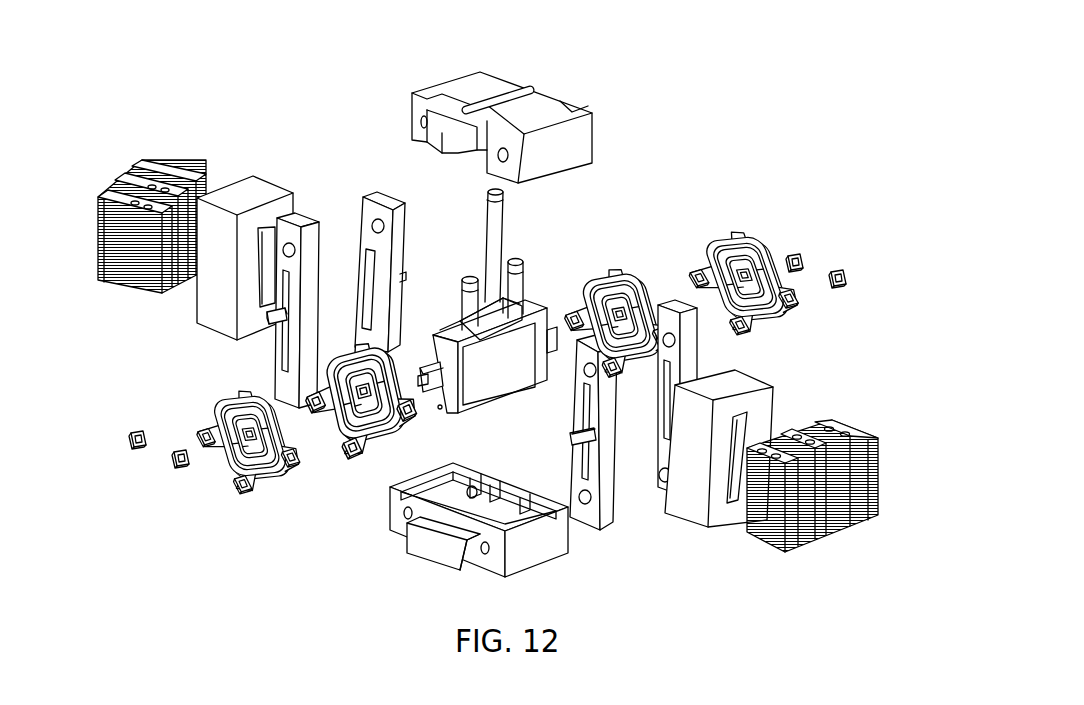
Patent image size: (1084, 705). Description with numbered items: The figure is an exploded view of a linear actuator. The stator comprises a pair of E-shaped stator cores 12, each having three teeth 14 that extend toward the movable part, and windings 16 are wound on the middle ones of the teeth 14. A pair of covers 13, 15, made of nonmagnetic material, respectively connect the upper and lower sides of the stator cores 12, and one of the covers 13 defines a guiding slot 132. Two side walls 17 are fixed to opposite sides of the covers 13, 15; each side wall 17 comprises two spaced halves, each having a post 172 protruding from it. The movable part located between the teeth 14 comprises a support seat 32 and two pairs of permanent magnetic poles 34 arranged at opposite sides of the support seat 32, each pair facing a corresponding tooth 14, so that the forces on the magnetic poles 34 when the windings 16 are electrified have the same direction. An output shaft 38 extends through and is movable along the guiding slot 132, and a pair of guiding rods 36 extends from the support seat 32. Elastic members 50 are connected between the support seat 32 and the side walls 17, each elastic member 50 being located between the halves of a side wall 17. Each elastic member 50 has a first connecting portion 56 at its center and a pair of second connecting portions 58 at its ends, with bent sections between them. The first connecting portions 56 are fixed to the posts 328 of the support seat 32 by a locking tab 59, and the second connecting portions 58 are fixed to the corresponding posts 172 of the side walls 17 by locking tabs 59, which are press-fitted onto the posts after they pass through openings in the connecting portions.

The stator core 12 is at (812, 475).
The cover 13 is at (534, 100).
The teeth 14 is at (826, 436).
The cover 15 is at (540, 548).
The winding 16 is at (733, 378).
The side wall 17 is at (366, 210).
The support seat 32 is at (471, 341).
The permanent magnetic pole 34 is at (490, 373).
The guiding rod 36 is at (523, 290).
The output shaft 38 is at (489, 208).
The elastic member 50 is at (250, 486).
The first connecting portion 56 is at (240, 436).
The second connecting portion 58 is at (196, 422).
The locking tab 59 is at (134, 450).
The guiding slot 132 is at (521, 93).
The post 172 is at (276, 321).
The post 328 is at (436, 408).